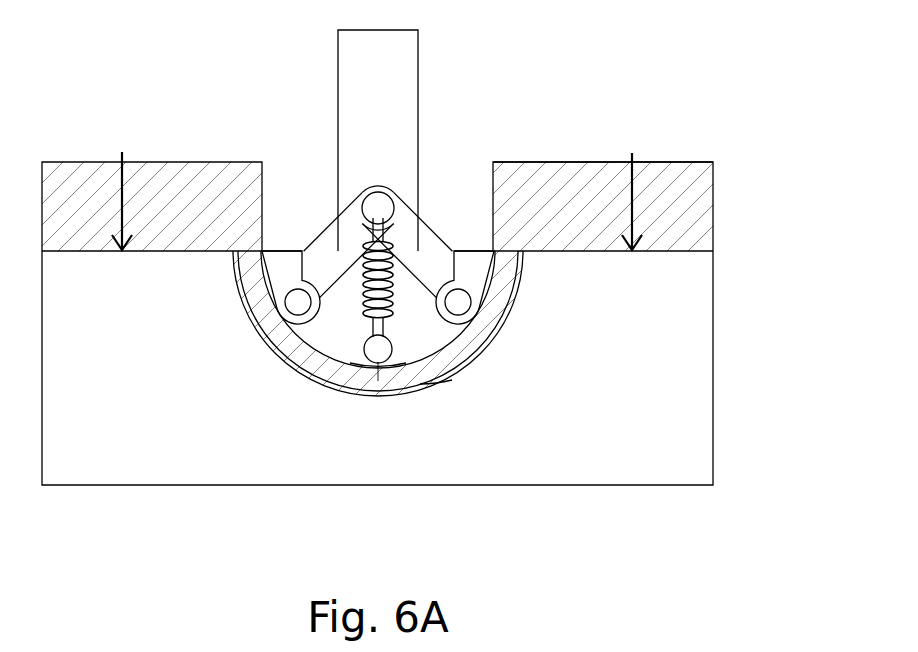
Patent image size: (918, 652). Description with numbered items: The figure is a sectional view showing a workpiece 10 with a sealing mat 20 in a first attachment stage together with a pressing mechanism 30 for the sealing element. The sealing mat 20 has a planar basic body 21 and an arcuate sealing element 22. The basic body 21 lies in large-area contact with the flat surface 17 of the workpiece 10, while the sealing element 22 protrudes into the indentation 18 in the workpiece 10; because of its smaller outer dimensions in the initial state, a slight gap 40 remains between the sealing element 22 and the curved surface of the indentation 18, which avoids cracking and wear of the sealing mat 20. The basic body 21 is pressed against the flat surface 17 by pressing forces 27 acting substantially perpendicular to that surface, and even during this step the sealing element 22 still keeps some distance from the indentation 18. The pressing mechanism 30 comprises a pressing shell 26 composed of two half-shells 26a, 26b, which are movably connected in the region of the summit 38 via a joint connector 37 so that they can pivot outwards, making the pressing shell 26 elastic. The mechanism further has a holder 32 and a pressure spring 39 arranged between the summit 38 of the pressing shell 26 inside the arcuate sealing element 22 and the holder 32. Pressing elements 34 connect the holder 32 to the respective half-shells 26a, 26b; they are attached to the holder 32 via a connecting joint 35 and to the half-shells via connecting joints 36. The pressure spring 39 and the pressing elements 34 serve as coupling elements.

The workpiece 10 is at (713, 343).
The flat surface 17 is at (688, 250).
The indentation 18 is at (397, 370).
The sealing mat 20 is at (714, 207).
The planar basic body 21 is at (694, 180).
The arcuate sealing element 22 is at (460, 350).
The pressing shell 26 is at (323, 345).
The first half-shell 26a is at (276, 267).
The second half-shell 26b is at (480, 267).
The pressing forces 27 is at (632, 181).
The pressing mechanism 30 is at (451, 103).
The holder 32 is at (355, 72).
The pressing element 34 is at (432, 251).
The connecting joint 35 is at (378, 200).
The connecting joint 36 is at (505, 320).
The joint connector 37 is at (383, 352).
The summit 38 is at (380, 367).
The pressure spring 39 is at (392, 253).
The gap 40 is at (437, 380).